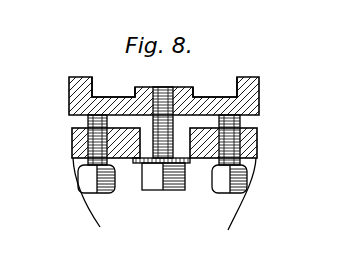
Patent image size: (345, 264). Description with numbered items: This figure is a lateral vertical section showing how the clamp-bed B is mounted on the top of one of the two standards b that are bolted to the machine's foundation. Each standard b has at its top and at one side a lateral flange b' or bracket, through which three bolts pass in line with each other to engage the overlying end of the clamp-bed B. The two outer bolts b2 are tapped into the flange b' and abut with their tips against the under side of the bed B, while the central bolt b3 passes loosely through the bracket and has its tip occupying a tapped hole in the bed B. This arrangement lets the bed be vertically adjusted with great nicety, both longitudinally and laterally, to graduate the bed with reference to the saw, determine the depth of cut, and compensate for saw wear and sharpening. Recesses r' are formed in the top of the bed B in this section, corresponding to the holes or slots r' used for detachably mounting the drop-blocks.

The clamp-bed B is at (162, 96).
The holes or slots r' is at (164, 86).
The lateral flange b' is at (162, 143).
The standards b is at (166, 159).
The outer bolts b2 is at (85, 182).
The central bolt b3 is at (152, 188).